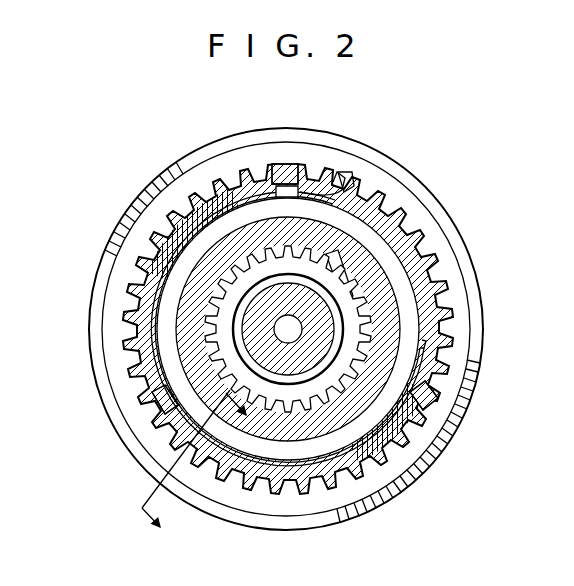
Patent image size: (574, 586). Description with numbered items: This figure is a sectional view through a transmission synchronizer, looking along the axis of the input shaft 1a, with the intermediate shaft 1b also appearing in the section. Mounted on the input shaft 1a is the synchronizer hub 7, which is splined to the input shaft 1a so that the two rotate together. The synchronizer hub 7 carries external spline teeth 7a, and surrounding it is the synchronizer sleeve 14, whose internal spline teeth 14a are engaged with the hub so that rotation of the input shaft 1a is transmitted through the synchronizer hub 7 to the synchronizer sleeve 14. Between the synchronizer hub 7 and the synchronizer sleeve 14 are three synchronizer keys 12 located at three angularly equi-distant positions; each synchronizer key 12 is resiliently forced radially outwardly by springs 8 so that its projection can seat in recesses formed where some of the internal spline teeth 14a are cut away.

The synchronizer sleeve 14 is at (413, 178).
The internal spline teeth 14a is at (343, 176).
The synchronizer hub 7 is at (378, 278).
The external spline teeth 7a is at (330, 172).
The springs 8 is at (150, 302).
The synchronizer key 12 is at (266, 172).
The input shaft 1a is at (381, 321).
The intermediate shaft 1b is at (340, 262).